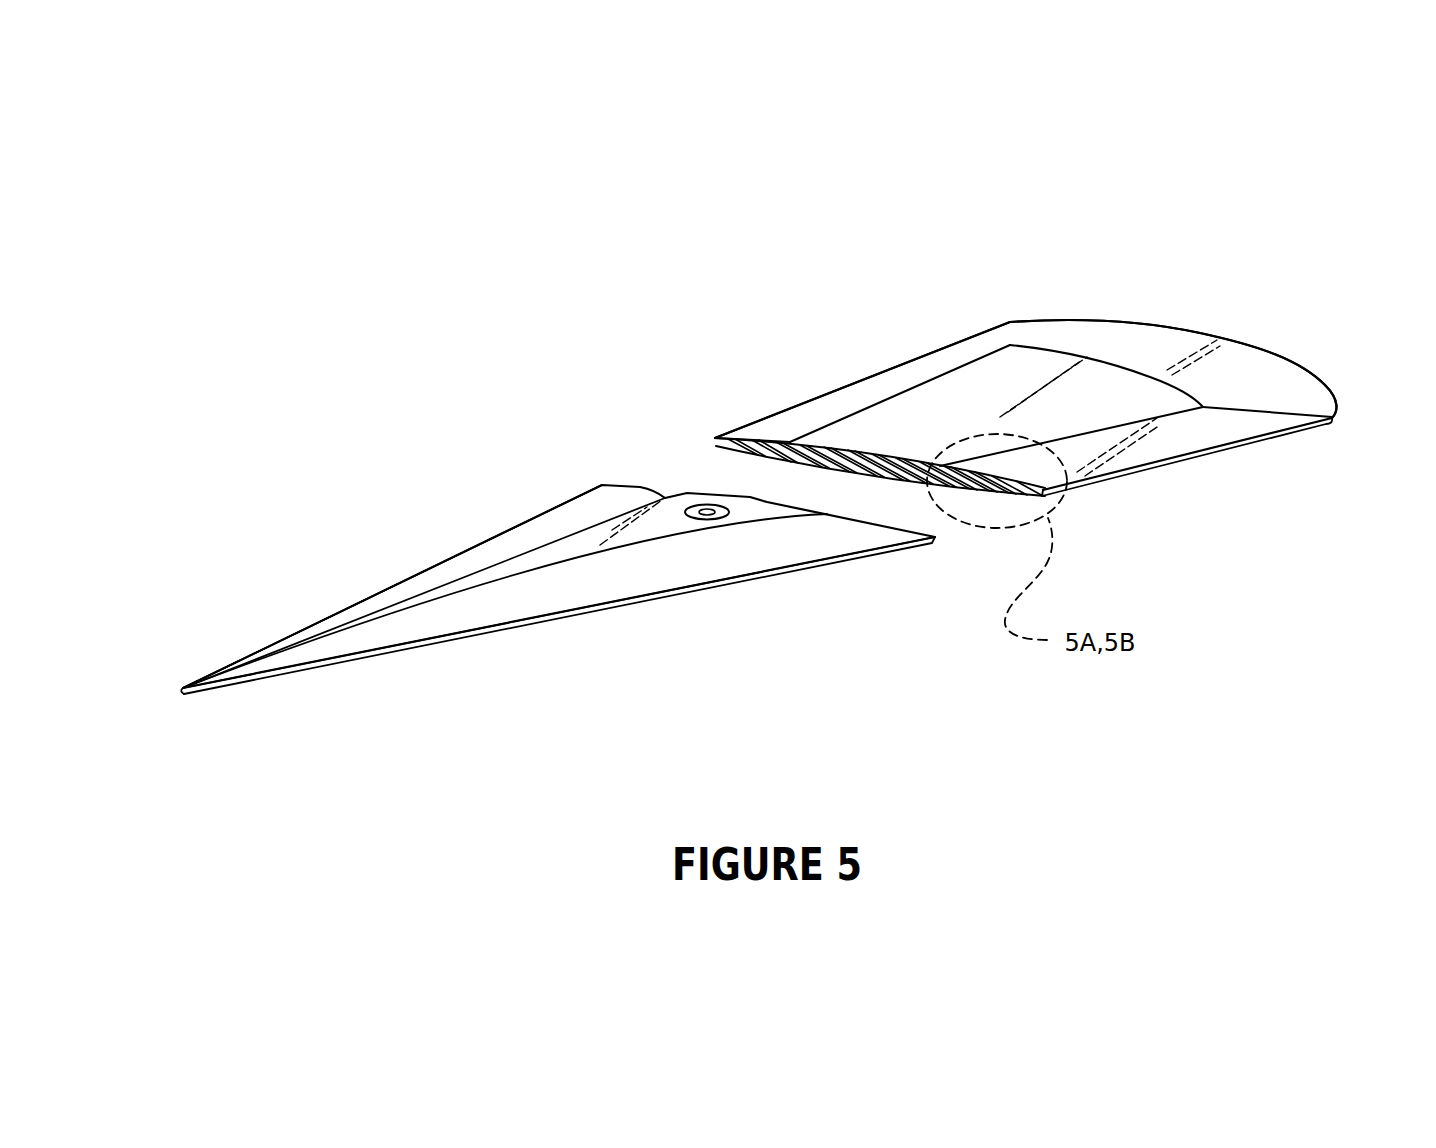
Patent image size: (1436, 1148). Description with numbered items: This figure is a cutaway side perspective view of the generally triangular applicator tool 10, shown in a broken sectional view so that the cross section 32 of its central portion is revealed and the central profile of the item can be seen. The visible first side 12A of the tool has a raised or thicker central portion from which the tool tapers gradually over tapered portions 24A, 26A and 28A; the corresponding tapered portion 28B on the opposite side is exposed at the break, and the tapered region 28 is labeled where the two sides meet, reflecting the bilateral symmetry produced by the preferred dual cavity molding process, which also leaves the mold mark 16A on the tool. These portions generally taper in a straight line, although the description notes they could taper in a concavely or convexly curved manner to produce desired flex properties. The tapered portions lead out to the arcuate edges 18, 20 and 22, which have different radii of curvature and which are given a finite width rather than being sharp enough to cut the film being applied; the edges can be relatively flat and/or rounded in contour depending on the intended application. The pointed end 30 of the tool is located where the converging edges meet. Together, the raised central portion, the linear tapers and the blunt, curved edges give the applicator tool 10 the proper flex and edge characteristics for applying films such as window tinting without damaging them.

The applicator tool 10 is at (940, 232).
The first side 12A is at (533, 572).
The mold mark 16A is at (707, 504).
The arcuate edge 18 is at (1248, 342).
The arcuate edge 20 is at (277, 640).
The arcuate edge 22 is at (668, 595).
The tapered portion 24A is at (1307, 372).
The tapered portion 26A is at (457, 622).
The bevel strip 28 is at (790, 413).
The tapered portion 28A is at (407, 580).
The tapered portion 28B is at (716, 438).
The tip 30 is at (181, 697).
The cross section 32 is at (924, 488).